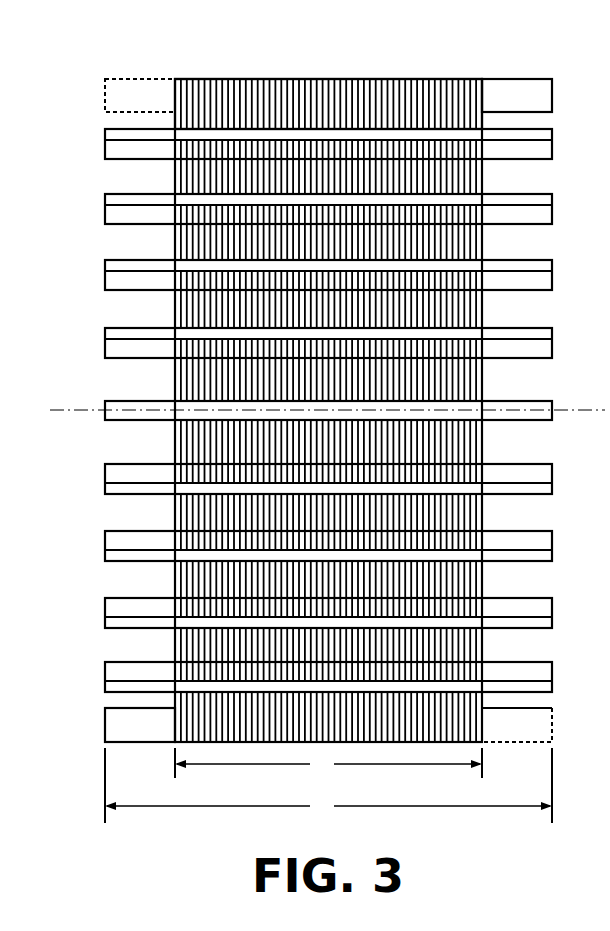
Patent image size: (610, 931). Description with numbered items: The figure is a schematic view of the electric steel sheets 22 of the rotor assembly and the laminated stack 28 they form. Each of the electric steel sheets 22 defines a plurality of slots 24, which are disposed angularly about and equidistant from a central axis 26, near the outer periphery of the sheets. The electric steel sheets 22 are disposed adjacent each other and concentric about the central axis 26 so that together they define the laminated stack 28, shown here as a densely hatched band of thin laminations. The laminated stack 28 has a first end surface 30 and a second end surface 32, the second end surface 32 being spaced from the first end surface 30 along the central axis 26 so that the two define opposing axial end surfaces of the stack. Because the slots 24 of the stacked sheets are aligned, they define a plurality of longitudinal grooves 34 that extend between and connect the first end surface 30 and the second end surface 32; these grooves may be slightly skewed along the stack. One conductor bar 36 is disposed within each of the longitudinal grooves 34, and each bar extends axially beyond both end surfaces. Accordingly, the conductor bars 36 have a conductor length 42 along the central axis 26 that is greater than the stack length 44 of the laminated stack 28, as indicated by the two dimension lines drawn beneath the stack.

The electric steel sheets 22 is at (461, 85).
The slots 24 is at (203, 198).
The central axis 26 is at (590, 410).
The laminated stack 28 is at (272, 79).
The first end surface 30 is at (173, 122).
The second end surface 32 is at (484, 122).
The longitudinal grooves 34 is at (207, 265).
The conductor bars 36 is at (104, 611).
The conductor length 42 is at (328, 785).
The stack length 44 is at (328, 763).